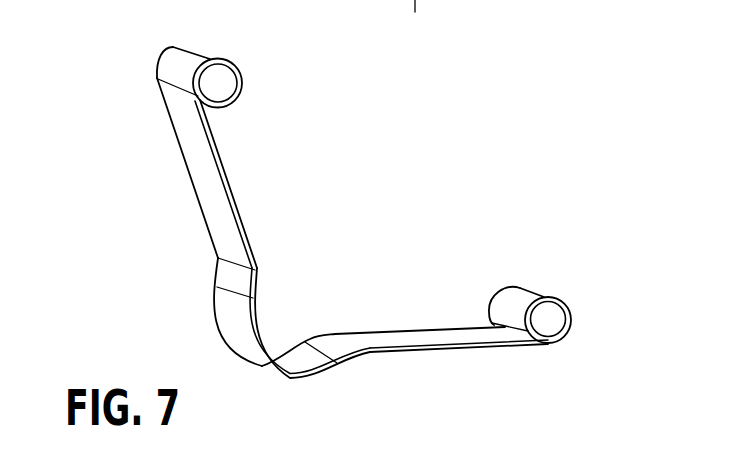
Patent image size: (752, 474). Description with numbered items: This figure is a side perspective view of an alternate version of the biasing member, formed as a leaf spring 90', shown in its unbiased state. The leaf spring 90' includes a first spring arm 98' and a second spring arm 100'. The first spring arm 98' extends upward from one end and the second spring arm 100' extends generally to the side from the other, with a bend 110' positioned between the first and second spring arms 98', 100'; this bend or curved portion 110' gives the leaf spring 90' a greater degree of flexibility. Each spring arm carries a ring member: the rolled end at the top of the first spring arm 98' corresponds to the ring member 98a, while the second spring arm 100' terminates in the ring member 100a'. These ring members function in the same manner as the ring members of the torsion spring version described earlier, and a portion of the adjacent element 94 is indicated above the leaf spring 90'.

The leaf spring 90' is at (85, 134).
The base 94 is at (415, 19).
The ring member 98a is at (208, 60).
The first spring arm 98' is at (198, 173).
The bend 110' is at (292, 349).
The second spring arm 100' is at (446, 372).
The ring member 100a' is at (560, 276).